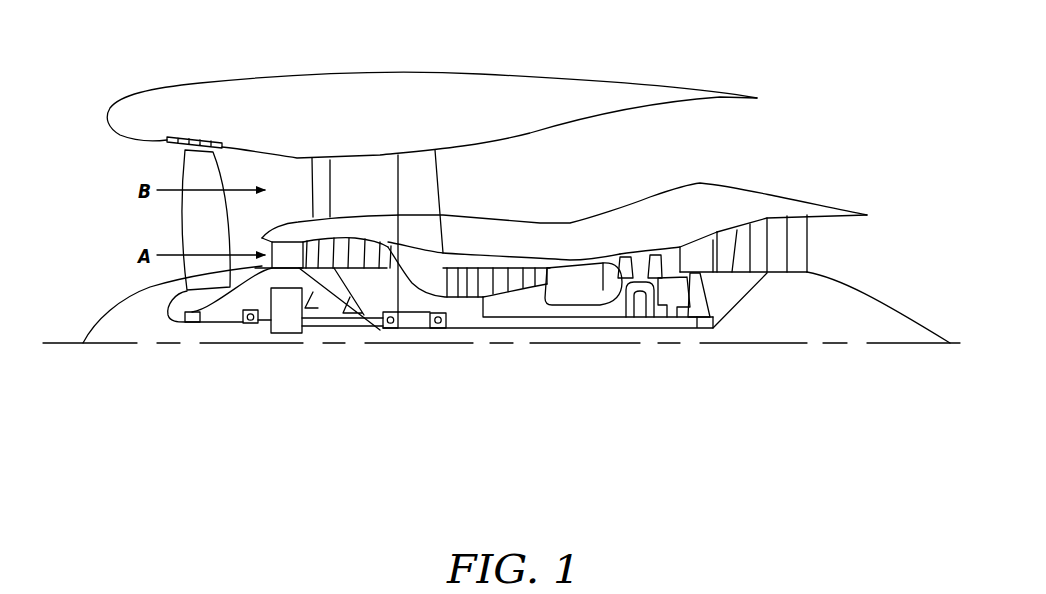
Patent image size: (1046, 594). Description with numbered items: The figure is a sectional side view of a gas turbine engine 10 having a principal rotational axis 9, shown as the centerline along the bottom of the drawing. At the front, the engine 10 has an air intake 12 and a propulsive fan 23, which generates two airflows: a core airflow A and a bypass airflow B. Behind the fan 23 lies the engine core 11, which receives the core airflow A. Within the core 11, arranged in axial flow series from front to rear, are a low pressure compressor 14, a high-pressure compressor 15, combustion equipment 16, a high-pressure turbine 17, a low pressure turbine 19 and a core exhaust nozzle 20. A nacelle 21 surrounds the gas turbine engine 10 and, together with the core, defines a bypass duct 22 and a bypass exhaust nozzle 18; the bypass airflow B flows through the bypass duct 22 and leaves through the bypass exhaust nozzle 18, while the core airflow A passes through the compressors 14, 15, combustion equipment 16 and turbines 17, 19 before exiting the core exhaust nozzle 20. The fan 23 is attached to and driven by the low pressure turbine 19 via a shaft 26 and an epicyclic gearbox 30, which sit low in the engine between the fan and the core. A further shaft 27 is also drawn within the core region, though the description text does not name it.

The principal rotational axis 9 is at (663, 345).
The gas turbine engine 10 is at (183, 88).
The core 11 is at (547, 240).
The air intake 12 is at (137, 167).
The low pressure compressor 14 is at (360, 243).
The high-pressure compressor 15 is at (500, 278).
The combustion equipment 16 is at (577, 280).
The high-pressure turbine 17 is at (637, 260).
The bypass exhaust nozzle 18 is at (750, 140).
The low pressure turbine 19 is at (777, 233).
The core exhaust nozzle 20 is at (837, 243).
The nacelle 21 is at (412, 87).
The bypass duct 22 is at (702, 154).
The propulsive fan 23 is at (187, 220).
The shaft 26 is at (493, 333).
The high speed spool 27 is at (533, 328).
The epicyclic gearbox 30 is at (283, 322).